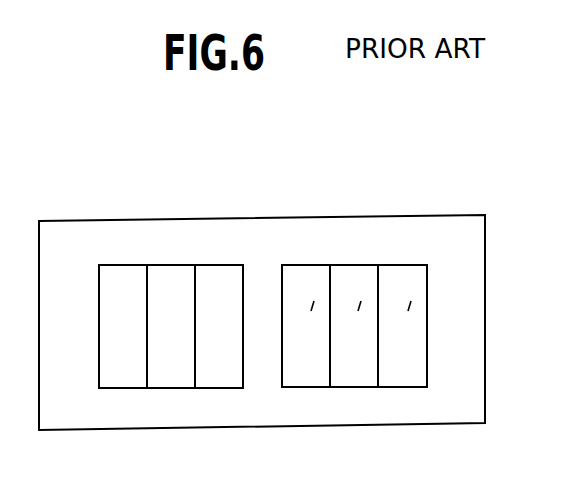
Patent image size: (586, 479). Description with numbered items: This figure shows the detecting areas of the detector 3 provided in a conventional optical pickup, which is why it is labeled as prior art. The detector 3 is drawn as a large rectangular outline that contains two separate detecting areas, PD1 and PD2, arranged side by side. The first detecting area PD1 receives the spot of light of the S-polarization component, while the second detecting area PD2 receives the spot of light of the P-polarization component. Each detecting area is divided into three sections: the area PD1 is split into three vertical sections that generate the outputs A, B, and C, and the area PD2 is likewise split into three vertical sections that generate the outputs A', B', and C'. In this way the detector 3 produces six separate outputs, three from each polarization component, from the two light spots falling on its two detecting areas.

The detector 3 is at (350, 198).
The detecting area PD1 is at (144, 260).
The detecting area PD2 is at (389, 258).